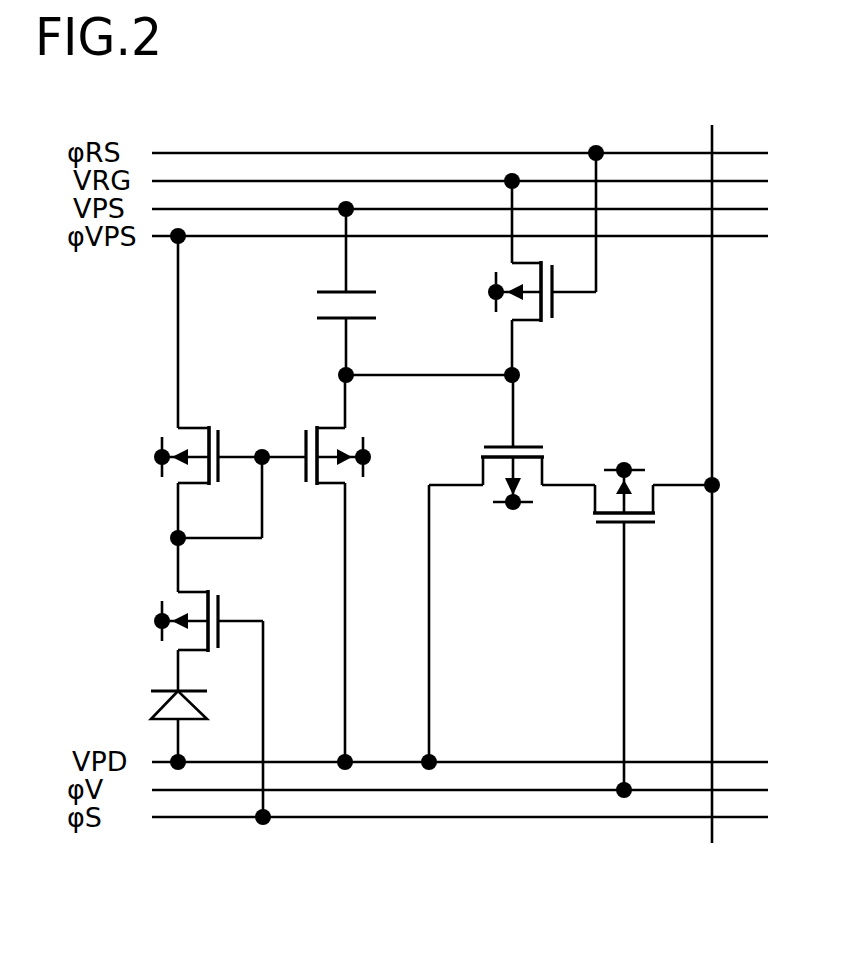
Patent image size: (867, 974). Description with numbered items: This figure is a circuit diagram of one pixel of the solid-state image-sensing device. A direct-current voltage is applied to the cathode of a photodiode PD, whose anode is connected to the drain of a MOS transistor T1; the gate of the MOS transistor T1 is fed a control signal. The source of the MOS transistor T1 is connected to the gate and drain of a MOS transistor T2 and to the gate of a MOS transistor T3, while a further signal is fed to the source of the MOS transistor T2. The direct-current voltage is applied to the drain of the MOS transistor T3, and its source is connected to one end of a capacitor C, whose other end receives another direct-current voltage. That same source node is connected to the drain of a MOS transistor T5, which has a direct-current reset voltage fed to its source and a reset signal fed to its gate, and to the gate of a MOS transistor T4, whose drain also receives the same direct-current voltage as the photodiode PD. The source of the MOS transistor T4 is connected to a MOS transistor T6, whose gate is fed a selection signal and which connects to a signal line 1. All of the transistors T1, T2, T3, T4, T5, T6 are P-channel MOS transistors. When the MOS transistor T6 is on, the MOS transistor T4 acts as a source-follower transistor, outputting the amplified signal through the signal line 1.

The signal line 1 is at (712, 823).
The MOS transistor T1 is at (211, 616).
The MOS transistor T2 is at (205, 473).
The MOS transistor T3 is at (352, 473).
The MOS transistor T4 is at (512, 461).
The MOS transistor T5 is at (546, 255).
The MOS transistor T6 is at (652, 471).
The capacitor C is at (348, 288).
The photodiode PD is at (203, 707).